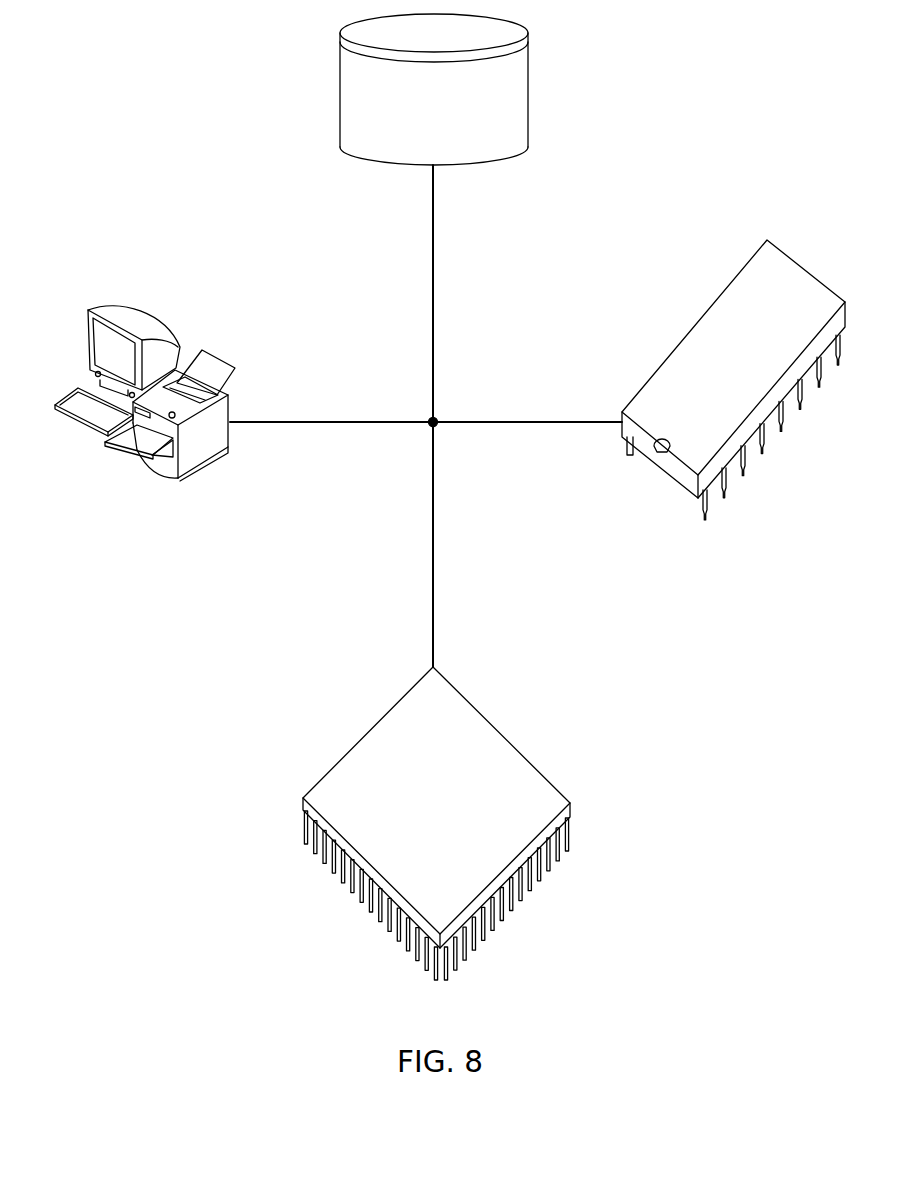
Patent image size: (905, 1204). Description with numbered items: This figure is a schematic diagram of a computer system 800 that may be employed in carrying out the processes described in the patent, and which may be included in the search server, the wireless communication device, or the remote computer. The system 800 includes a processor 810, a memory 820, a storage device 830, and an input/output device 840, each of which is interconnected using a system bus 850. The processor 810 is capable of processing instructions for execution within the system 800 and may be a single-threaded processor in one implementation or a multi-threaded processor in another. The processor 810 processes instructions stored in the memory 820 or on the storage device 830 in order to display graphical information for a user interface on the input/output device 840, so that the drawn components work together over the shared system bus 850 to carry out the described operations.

The computer system 800 is at (168, 843).
The processor 810 is at (368, 730).
The memory 820 is at (692, 322).
The storage device 830 is at (340, 88).
The input/output device 840 is at (88, 309).
The system bus 850 is at (345, 422).